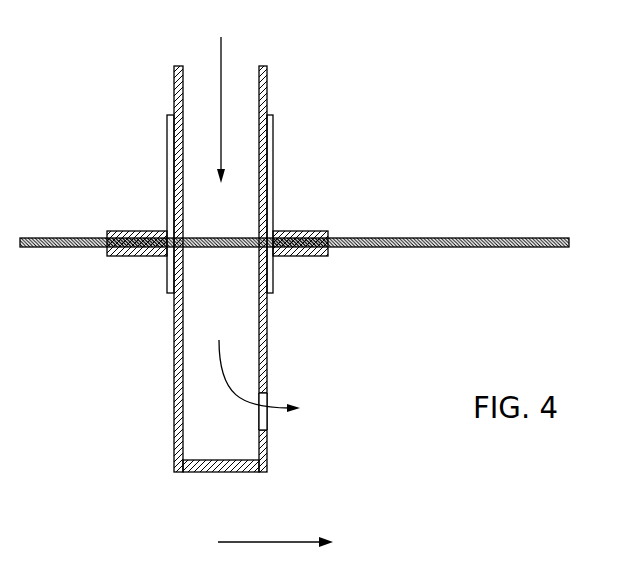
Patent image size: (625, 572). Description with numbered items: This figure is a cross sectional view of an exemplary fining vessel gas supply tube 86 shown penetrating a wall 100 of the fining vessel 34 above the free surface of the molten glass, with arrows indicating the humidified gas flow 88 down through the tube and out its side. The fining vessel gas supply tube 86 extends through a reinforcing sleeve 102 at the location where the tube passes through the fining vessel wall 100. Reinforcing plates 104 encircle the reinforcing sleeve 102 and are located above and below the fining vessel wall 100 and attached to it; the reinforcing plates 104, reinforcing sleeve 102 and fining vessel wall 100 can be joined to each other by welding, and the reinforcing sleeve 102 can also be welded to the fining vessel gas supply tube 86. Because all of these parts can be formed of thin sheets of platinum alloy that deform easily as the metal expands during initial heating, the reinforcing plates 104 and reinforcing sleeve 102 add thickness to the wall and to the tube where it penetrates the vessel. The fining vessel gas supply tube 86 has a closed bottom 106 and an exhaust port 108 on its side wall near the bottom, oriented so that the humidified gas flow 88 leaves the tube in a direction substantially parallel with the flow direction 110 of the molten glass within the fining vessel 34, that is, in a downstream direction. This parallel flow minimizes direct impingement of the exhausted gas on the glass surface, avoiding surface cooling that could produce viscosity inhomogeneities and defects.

The fining vessel 34 is at (294, 200).
The fining vessel gas supply tube 86 is at (245, 272).
The gas flow 88 is at (221, 44).
The fining vessel wall 100 is at (485, 238).
The reinforcing sleeve 102 is at (167, 168).
The reinforcing plates 104 is at (131, 257).
The closed bottom 106 is at (212, 472).
The exhaust port 108 is at (268, 422).
The flow direction 110 is at (275, 553).